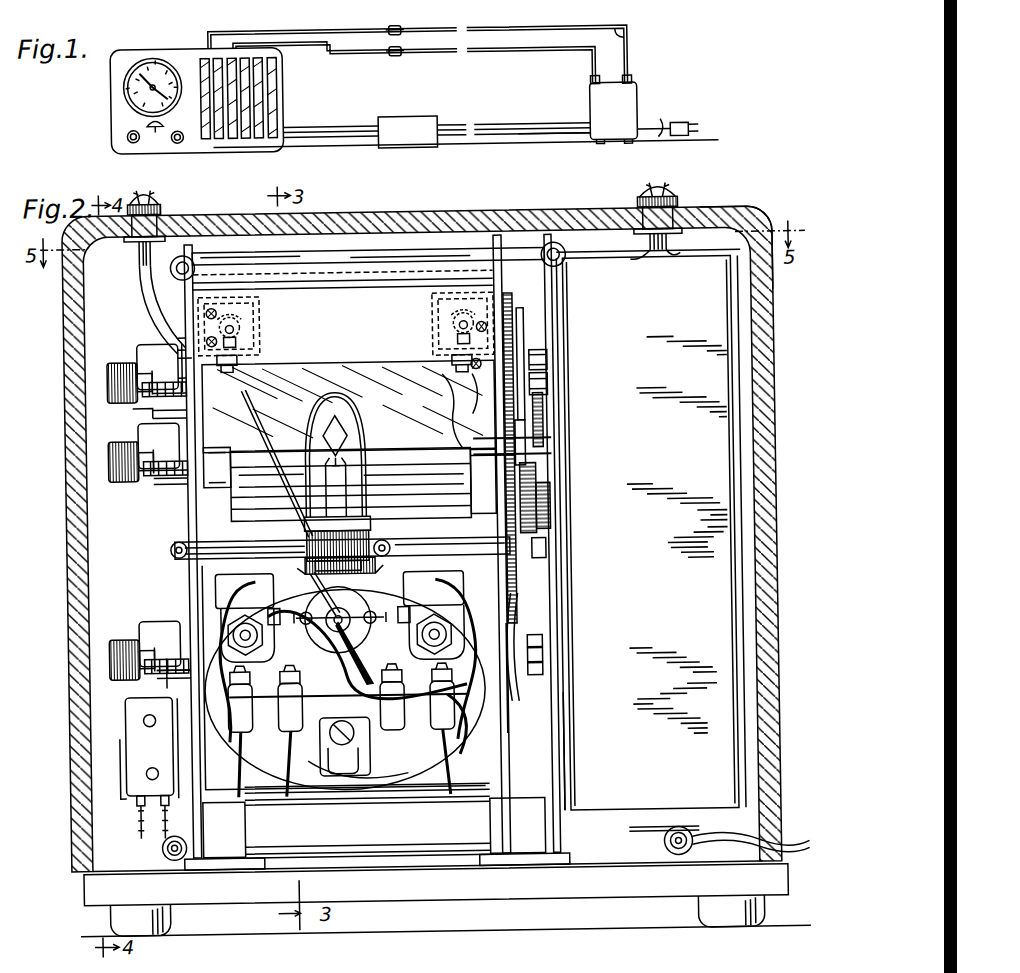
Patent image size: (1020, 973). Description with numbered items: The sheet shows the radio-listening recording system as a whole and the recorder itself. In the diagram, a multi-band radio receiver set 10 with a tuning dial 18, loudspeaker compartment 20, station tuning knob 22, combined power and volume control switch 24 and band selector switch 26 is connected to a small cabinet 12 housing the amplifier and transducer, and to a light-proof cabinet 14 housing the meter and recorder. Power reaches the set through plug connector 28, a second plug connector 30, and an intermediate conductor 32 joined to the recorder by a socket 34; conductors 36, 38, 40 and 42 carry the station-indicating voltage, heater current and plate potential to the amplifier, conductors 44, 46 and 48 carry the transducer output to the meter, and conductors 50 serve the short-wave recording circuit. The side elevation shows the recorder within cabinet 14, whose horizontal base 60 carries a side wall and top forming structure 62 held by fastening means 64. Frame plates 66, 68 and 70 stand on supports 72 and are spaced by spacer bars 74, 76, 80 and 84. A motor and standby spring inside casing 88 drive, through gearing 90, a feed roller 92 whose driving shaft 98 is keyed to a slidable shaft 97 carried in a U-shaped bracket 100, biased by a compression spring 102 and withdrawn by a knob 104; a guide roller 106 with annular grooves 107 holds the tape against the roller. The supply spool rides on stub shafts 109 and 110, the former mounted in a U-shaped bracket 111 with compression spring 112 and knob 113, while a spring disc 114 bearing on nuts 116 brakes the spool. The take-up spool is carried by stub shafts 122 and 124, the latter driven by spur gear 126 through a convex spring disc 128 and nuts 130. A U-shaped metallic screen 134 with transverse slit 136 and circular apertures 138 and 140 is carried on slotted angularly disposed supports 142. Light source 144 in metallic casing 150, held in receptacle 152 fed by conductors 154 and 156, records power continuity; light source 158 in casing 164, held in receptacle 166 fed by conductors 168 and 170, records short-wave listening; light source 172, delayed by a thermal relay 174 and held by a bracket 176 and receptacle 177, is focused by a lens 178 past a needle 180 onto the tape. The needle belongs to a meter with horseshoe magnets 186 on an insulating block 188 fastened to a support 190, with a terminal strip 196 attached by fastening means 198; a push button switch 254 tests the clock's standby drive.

In FIG. 1, the multi-band radio receiver set 10 is at (118, 120).
In FIG. 1, the cabinet 12 is at (418, 149).
In FIG. 1, the cabinet 14 is at (623, 130).
In FIG. 2, the cabinet 14 is at (562, 224).
In FIG. 1, the tuning dial 18 is at (125, 90).
In FIG. 1, the loudspeaker compartment 20 is at (270, 104).
In FIG. 1, the station tuning knob 22 is at (157, 136).
In FIG. 1, the combined power and volume control switch 24 is at (131, 145).
In FIG. 1, the band selector switch 26 is at (181, 147).
In FIG. 1, the plug connector 28 is at (396, 62).
In FIG. 1, the plug connector 30 is at (690, 126).
In FIG. 1, the intermediate conductor 32 is at (536, 58).
In FIG. 2, the intermediate conductor 32 is at (140, 276).
In FIG. 1, the socket 34 is at (594, 90).
In FIG. 2, the socket 34 is at (162, 215).
In FIG. 1, the conductor 36 is at (300, 130).
In FIG. 1, the conductor 38 is at (318, 135).
In FIG. 1, the conductor 40 is at (340, 140).
In FIG. 1, the fourth conductor 42 is at (336, 142).
In FIG. 1, the conductor 44 is at (478, 129).
In FIG. 2, the conductor 44 is at (236, 752).
In FIG. 1, the conductor 46 is at (492, 141).
In FIG. 2, the conductor 46 is at (270, 728).
In FIG. 1, the conductor 48 is at (530, 143).
In FIG. 2, the conductor 48 is at (452, 772).
In FIG. 1, the conductors 50 is at (633, 52).
In FIG. 2, the conductors 50 is at (684, 222).
In FIG. 2, the horizontal base 60 is at (626, 892).
In FIG. 2, the side wall and top forming structure 62 is at (706, 227).
In FIG. 2, the fastening means 64 is at (152, 852).
In FIG. 2, the frame plate 66 is at (558, 760).
In FIG. 2, the frame plate 68 is at (508, 742).
In FIG. 2, the frame plate 70 is at (200, 598).
In FIG. 2, the supports 72 is at (377, 833).
In FIG. 2, the spacer bars 74 is at (360, 806).
In FIG. 2, the spacer bar 76 is at (520, 584).
In FIG. 2, the spacer bar 80 is at (338, 256).
In FIG. 2, the spacer bar 84 is at (500, 252).
In FIG. 2, the casing 88 is at (680, 633).
In FIG. 2, the gearing 90 is at (542, 430).
In FIG. 2, the feed roller 92 is at (548, 496).
In FIG. 2, the slidable shaft 97 is at (154, 480).
In FIG. 2, the driving shaft 98 is at (540, 462).
In FIG. 2, the U-shaped bracket 100 is at (148, 478).
In FIG. 2, the compression spring 102 is at (160, 484).
In FIG. 2, the knob 104 is at (112, 462).
In FIG. 2, the guide roller 106 is at (445, 524).
In FIG. 2, the annular grooves 107 is at (230, 540).
In FIG. 2, the stub shaft 109 is at (156, 676).
In FIG. 2, the stub shaft 110 is at (536, 646).
In FIG. 2, the U-shaped bracket 111 is at (154, 388).
In FIG. 2, the compression spring 112 is at (145, 384).
In FIG. 2, the knob 113 is at (112, 378).
In FIG. 2, the spring disc 114 is at (537, 676).
In FIG. 2, the nuts 116 is at (537, 662).
In FIG. 2, the stub shaft 122 is at (140, 414).
In FIG. 2, the stub shaft 124 is at (525, 362).
In FIG. 2, the spur gear 126 is at (512, 350).
In FIG. 2, the convex spring disc 128 is at (546, 378).
In FIG. 2, the nuts 130 is at (546, 390).
In FIG. 2, the U-shaped metallic screen 134 is at (291, 327).
In FIG. 2, the transverse slit 136 is at (428, 408).
In FIG. 2, the circular aperture 138 is at (252, 336).
In FIG. 2, the circular aperture 140 is at (437, 343).
In FIG. 2, the slotted angularly disposed supports 142 is at (218, 470).
In FIG. 2, the light source 144 is at (262, 320).
In FIG. 2, the metallic casing 150 is at (176, 310).
In FIG. 2, the receptacle 152 is at (240, 375).
In FIG. 2, the conductor 154 is at (165, 360).
In FIG. 2, the conductor 156 is at (172, 365).
In FIG. 2, the light source 158 is at (440, 316).
In FIG. 2, the casing 164 is at (440, 332).
In FIG. 2, the receptacle 166 is at (450, 366).
In FIG. 2, the conductor 168 is at (458, 390).
In FIG. 2, the conductor 170 is at (470, 420).
In FIG. 2, the light source 172 is at (362, 478).
In FIG. 2, the thermal relay 174 is at (110, 772).
In FIG. 2, the bracket 176 is at (162, 553).
In FIG. 2, the receptacle 177 is at (372, 574).
In FIG. 2, the lens 178 is at (418, 392).
In FIG. 2, the needle 180 is at (285, 470).
In FIG. 2, the horseshoe magnets 186 is at (395, 780).
In FIG. 2, the insulating block 188 is at (440, 764).
In FIG. 2, the support 190 is at (367, 842).
In FIG. 2, the terminal strip 196 is at (440, 722).
In FIG. 2, the fastening means 198 is at (318, 724).
In FIG. 2, the push button switch 254 is at (112, 750).